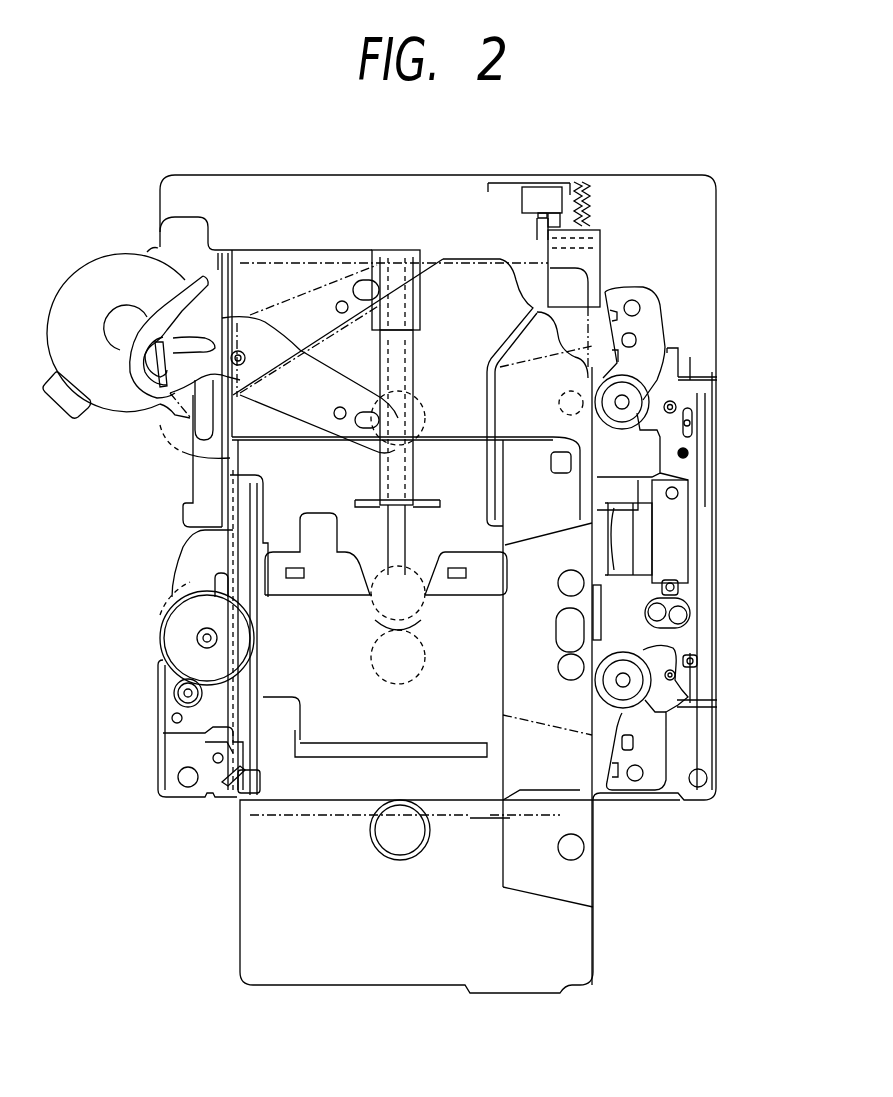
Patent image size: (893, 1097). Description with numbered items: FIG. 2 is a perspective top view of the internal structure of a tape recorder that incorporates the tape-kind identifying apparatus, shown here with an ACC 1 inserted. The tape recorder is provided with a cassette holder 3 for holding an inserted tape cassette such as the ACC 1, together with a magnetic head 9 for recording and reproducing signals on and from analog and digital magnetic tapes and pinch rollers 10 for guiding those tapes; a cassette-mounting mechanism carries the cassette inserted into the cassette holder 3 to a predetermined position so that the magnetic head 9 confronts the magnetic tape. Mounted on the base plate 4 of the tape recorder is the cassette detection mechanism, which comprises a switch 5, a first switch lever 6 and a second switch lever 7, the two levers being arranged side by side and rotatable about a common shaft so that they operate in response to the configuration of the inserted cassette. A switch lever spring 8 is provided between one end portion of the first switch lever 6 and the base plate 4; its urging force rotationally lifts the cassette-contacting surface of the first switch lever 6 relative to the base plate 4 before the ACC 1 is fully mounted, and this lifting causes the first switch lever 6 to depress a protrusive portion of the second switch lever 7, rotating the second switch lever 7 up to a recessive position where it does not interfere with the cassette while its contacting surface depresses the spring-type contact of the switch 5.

The ACC 1 is at (312, 978).
The cassette holder 3 is at (347, 742).
The base plate 4 is at (648, 184).
The switch 5 is at (540, 195).
The first switch lever 6 is at (596, 262).
The second switch lever 7 is at (531, 240).
The switch lever spring 8 is at (590, 186).
The magnetic head 9 is at (627, 538).
The pinch rollers 10 is at (655, 400).